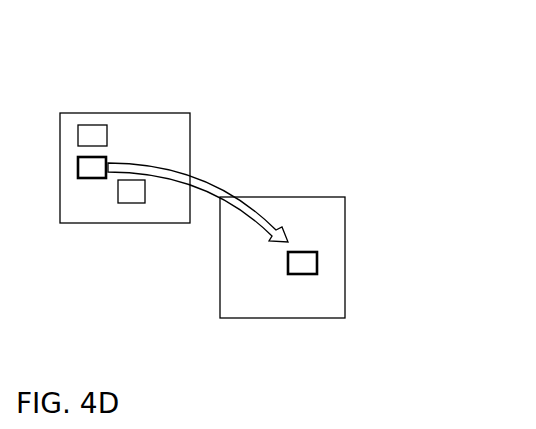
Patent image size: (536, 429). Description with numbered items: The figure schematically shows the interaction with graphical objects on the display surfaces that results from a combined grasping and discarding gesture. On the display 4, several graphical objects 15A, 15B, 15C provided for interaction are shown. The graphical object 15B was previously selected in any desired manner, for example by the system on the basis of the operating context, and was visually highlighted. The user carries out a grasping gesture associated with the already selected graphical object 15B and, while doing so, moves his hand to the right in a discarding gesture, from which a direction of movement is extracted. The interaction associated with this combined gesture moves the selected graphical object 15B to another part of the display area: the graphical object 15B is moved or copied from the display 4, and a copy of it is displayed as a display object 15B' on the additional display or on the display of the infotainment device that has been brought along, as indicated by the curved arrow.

The first area 4 is at (173, 130).
The first object 15A is at (91, 137).
The second object 15B is at (74, 230).
The third object 15C is at (130, 192).
The moved second object 15B' is at (313, 312).